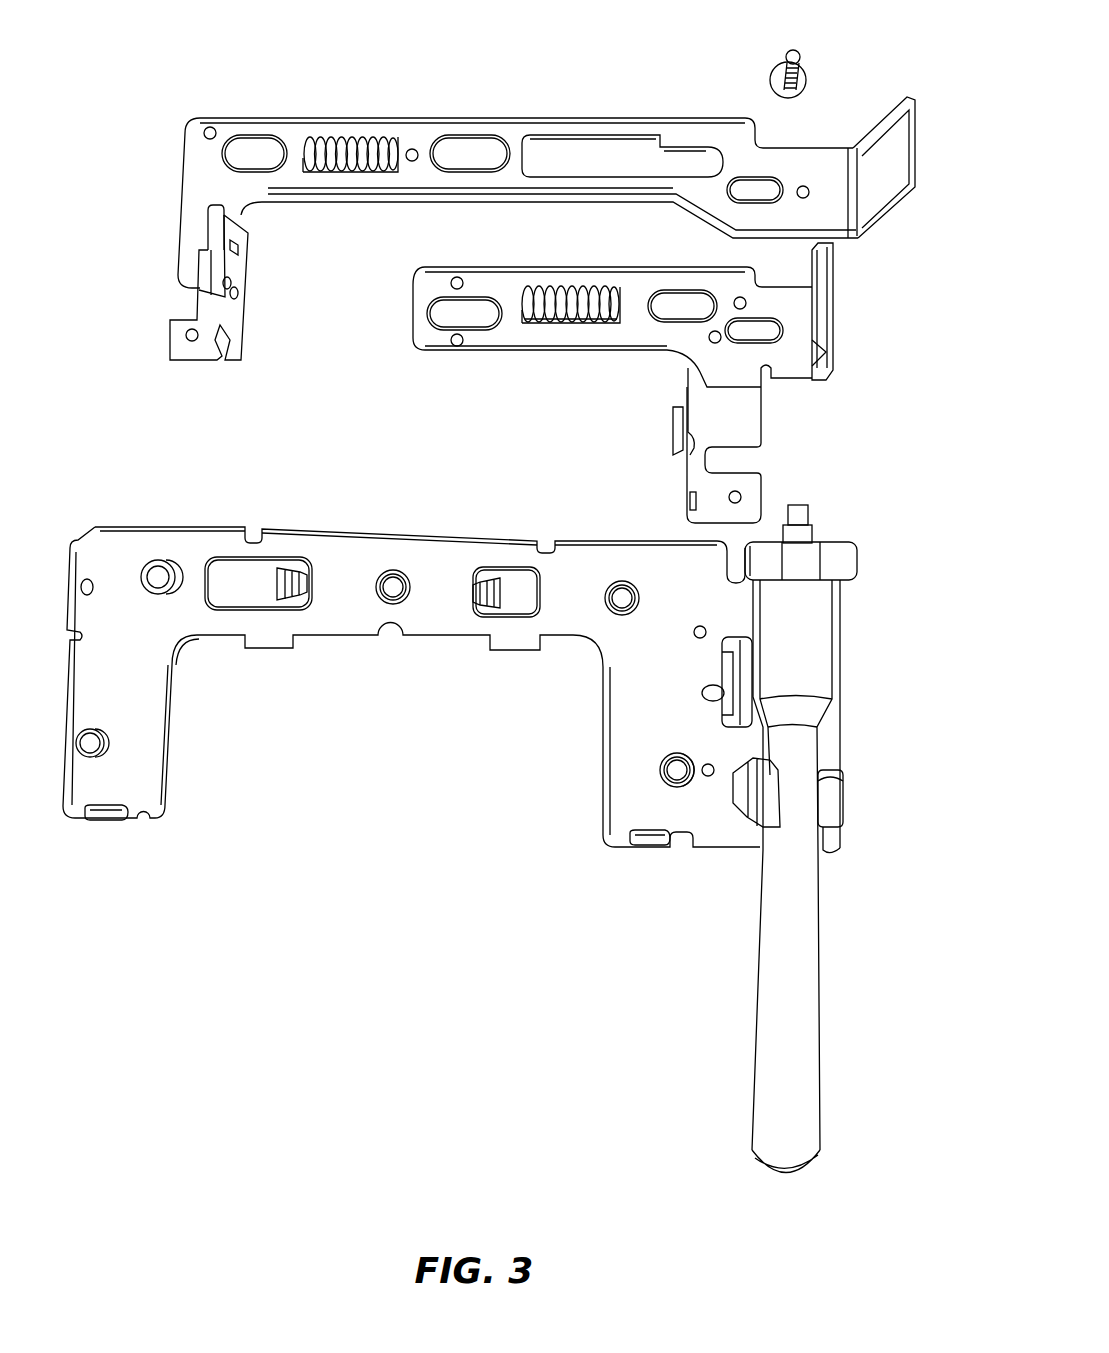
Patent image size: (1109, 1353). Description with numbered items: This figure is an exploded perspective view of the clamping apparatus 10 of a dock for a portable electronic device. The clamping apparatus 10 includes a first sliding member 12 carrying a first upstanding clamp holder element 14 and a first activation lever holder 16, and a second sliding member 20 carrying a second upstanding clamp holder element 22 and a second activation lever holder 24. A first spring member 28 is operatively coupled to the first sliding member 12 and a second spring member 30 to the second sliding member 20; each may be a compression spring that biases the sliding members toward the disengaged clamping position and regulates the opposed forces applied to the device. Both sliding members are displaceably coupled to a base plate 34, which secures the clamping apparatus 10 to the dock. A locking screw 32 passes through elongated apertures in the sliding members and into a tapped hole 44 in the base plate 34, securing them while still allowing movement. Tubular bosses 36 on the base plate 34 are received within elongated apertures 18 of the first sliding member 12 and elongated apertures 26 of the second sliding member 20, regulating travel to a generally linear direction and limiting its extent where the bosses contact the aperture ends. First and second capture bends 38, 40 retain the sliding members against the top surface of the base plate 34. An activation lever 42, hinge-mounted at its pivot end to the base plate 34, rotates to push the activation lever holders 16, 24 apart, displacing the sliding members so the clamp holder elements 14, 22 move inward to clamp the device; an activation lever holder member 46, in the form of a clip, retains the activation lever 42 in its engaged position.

The clamping apparatus 10 is at (405, 662).
The first sliding member 12 is at (390, 113).
The first upstanding clamp holder element 14 is at (255, 315).
The first activation lever holder 16 is at (927, 92).
The elongated apertures 18 is at (238, 148).
The second sliding member 20 is at (630, 265).
The second upstanding clamp holder element 22 is at (720, 457).
The second activation lever holder 24 is at (838, 283).
The elongated apertures 26 is at (445, 320).
The first spring member 28 is at (320, 131).
The second spring member 30 is at (518, 290).
The locking screw 32 is at (808, 60).
The base plate 34 is at (455, 567).
The tubular bosses 36 is at (163, 555).
The first capture bend 38 is at (105, 828).
The second capture bend 40 is at (650, 857).
The activation lever 42 is at (825, 1063).
The tapped hole 44 is at (700, 624).
The activation lever holder member 46 is at (847, 802).